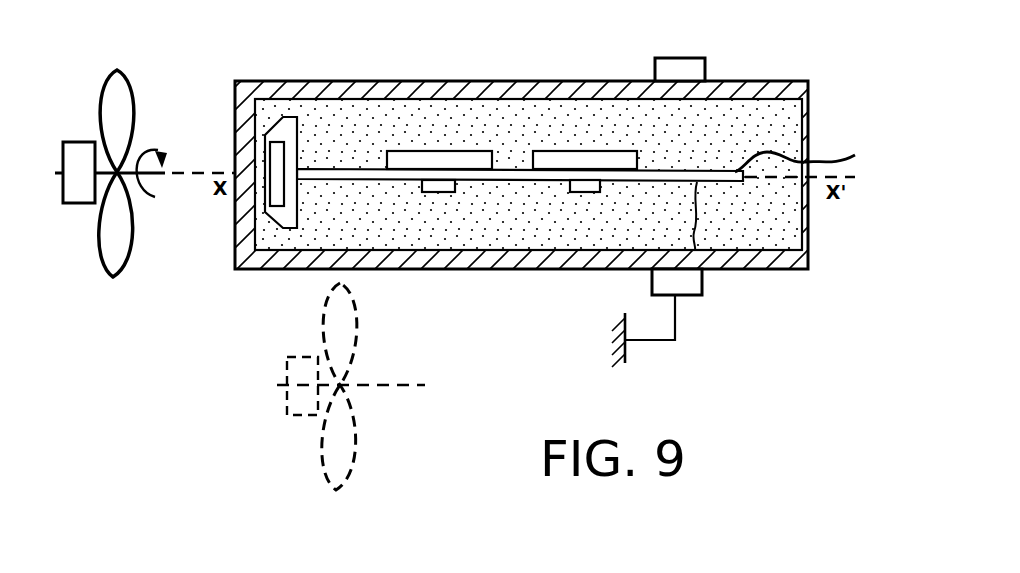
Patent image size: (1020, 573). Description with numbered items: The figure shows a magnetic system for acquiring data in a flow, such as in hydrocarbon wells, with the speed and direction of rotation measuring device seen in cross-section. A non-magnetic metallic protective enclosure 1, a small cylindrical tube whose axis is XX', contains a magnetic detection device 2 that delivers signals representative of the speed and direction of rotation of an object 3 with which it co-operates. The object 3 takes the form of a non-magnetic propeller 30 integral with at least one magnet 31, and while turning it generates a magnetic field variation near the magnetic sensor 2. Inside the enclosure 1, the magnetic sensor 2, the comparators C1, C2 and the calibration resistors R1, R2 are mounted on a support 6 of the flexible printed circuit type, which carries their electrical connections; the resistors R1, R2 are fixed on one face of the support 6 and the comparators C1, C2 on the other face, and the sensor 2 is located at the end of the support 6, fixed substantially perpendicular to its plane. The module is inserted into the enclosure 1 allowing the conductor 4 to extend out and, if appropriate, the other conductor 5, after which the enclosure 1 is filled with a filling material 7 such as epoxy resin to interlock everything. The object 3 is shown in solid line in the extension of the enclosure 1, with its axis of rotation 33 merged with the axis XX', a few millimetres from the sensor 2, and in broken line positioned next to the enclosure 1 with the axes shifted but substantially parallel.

The protective enclosure 1 is at (300, 269).
The magnetic detection device 2 is at (272, 199).
The object 3 is at (240, 300).
The conductor 4 is at (813, 162).
The other conductor 5 is at (700, 213).
The support 6 is at (682, 175).
The filling material 7 is at (745, 118).
The propeller 30 is at (113, 277).
The magnet 31 is at (80, 203).
The rotation axis 33 is at (128, 166).
The comparator C1 is at (422, 158).
The comparator C2 is at (568, 158).
The calibration resistor R1 is at (435, 191).
The calibration resistor R2 is at (592, 193).